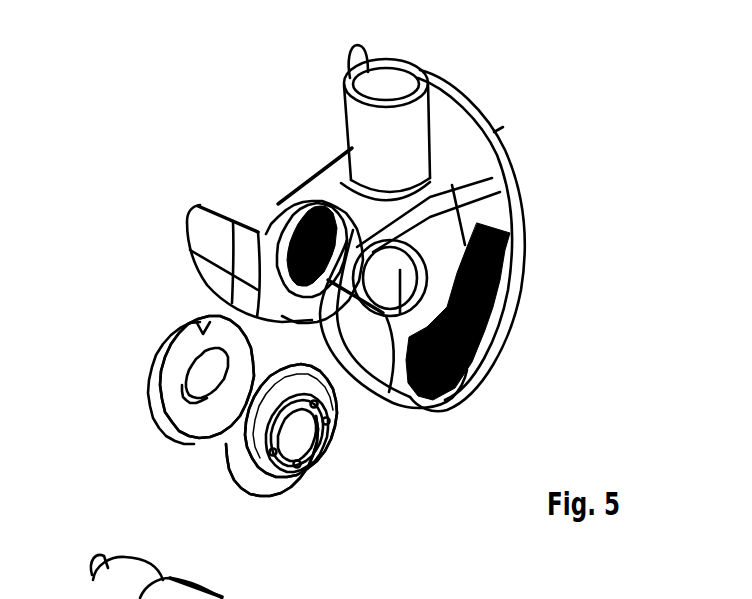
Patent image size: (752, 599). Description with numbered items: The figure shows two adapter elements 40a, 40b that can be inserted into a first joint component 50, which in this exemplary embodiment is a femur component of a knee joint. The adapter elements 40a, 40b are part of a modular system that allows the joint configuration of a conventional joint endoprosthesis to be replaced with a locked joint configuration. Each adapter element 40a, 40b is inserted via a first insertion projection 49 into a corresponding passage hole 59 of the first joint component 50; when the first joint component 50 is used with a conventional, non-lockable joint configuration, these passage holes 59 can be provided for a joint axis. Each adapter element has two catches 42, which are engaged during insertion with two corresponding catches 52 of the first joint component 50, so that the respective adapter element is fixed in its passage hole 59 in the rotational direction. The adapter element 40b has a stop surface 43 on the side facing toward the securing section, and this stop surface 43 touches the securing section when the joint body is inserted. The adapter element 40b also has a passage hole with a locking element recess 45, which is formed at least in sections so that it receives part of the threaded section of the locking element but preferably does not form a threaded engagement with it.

The first joint component 50 is at (487, 78).
The catch 52 is at (323, 197).
The passage hole 59 is at (440, 210).
The catch 42 is at (204, 318).
The adapter element 40a is at (124, 348).
The adapter element 40b is at (328, 462).
The stop surface 43 is at (334, 428).
The locking element recess 45 is at (185, 391).
The first insertion projection 49 is at (278, 484).